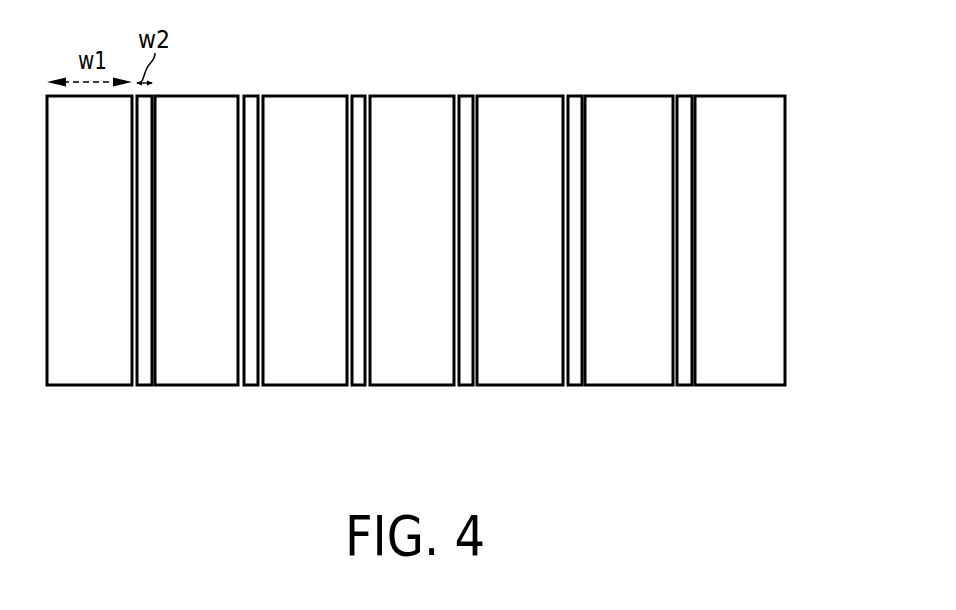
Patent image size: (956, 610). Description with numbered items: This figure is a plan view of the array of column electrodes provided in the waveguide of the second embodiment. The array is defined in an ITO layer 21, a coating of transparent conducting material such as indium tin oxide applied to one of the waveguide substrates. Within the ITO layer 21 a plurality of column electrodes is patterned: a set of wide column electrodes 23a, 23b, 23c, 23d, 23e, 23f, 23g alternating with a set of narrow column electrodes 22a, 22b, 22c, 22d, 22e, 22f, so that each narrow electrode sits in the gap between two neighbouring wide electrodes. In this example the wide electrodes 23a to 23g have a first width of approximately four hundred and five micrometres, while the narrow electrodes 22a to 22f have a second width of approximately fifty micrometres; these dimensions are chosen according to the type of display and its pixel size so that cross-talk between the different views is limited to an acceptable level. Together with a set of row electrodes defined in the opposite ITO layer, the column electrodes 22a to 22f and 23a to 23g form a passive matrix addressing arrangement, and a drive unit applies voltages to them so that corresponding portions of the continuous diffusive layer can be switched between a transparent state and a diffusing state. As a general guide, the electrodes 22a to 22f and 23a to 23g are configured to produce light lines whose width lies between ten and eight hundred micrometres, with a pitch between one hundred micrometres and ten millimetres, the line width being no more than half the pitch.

The ITO layer 21 is at (788, 53).
The column electrode 22a is at (149, 381).
The column electrode 22b is at (257, 381).
The column electrode 22c is at (366, 381).
The column electrode 22d is at (472, 381).
The column electrode 22e is at (580, 381).
The column electrode 22f is at (690, 381).
The column electrode 23a is at (78, 381).
The column electrode 23b is at (199, 381).
The column electrode 23c is at (312, 381).
The column electrode 23d is at (419, 381).
The column electrode 23e is at (525, 381).
The column electrode 23f is at (634, 381).
The column electrode 23g is at (744, 381).